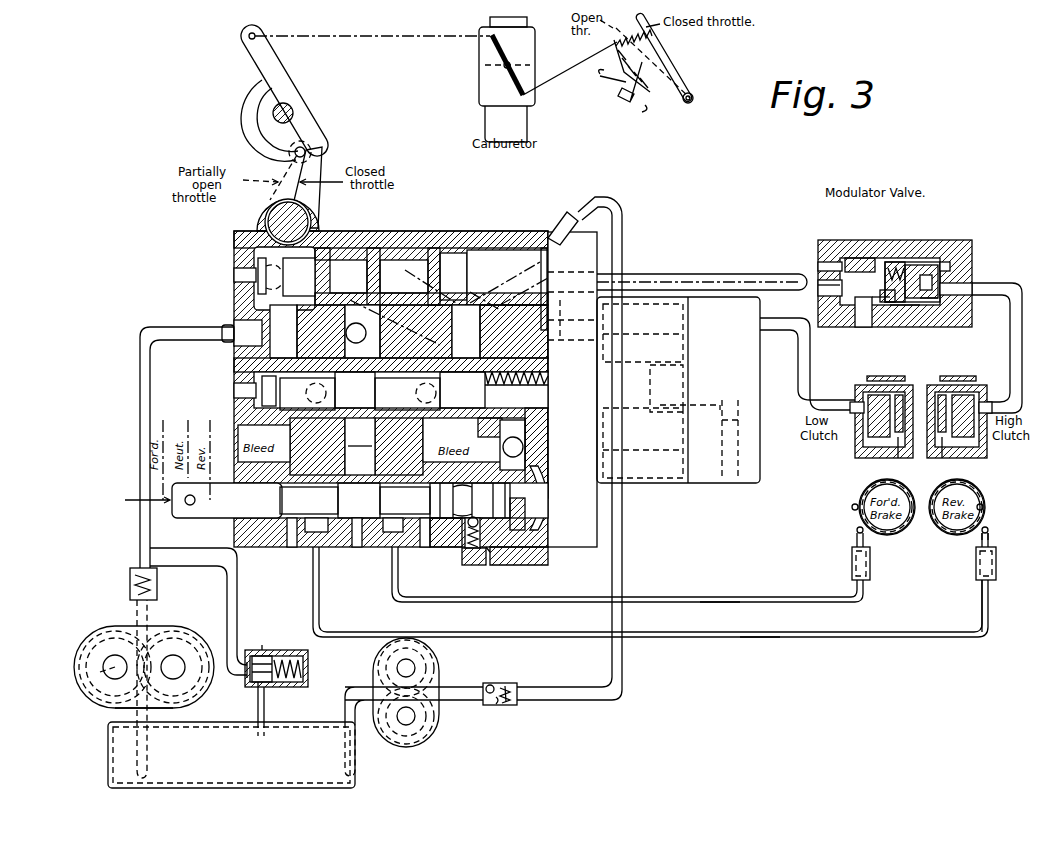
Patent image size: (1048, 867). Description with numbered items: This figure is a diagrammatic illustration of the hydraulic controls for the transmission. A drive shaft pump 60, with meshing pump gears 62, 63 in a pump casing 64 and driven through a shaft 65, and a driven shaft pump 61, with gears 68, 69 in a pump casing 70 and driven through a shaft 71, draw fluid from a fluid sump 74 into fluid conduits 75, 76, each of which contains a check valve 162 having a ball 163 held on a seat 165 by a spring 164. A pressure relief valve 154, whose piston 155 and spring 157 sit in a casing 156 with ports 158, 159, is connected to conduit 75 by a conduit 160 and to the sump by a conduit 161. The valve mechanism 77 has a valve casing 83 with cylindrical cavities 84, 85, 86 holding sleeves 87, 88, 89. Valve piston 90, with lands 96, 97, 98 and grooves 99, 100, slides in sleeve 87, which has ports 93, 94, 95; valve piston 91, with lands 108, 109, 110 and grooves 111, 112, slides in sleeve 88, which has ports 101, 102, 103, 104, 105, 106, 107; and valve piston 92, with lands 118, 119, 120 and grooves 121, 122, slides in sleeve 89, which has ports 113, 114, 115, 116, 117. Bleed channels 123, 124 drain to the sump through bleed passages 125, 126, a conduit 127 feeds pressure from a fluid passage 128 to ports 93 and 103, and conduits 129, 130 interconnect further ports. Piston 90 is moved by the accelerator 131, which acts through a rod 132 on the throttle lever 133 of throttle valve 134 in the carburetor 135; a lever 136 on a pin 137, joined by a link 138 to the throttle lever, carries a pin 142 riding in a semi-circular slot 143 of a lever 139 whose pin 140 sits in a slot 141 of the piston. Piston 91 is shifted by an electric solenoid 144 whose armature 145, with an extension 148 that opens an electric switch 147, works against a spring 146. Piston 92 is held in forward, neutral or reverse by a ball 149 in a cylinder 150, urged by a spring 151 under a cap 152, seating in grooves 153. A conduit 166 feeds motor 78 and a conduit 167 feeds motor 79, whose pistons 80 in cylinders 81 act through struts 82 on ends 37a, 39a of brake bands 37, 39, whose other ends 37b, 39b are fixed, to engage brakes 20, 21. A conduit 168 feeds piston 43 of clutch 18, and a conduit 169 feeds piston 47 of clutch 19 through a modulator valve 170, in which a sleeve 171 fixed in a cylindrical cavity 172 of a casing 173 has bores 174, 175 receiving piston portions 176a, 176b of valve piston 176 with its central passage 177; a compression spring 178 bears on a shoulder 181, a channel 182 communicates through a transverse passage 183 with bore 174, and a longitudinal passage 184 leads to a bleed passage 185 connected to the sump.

The lever 136 is at (272, 50).
The pin 137 is at (291, 107).
The link 138 is at (387, 40).
The lever 139 is at (322, 168).
The pin 142 is at (305, 146).
The semi-circular slot 143 is at (256, 125).
The accelerator 131 is at (665, 52).
The rod 132 is at (574, 70).
The throttle lever 133 is at (491, 37).
The throttle valve 134 is at (485, 65).
The carburetor 135 is at (472, 88).
The valve mechanism 77 is at (433, 219).
The land 96 is at (303, 262).
The land 97 is at (378, 231).
The port 93 is at (370, 250).
The port 94 is at (430, 252).
The port 95 is at (440, 250).
The sleeve 87 is at (440, 266).
The valve casing 83 is at (548, 236).
The cylindrical cavity 84 is at (550, 262).
The pin 140 is at (256, 256).
The valve piston 90 is at (246, 278).
The slot 141 is at (258, 290).
The bleed channel 123 is at (258, 326).
The land 98 is at (468, 276).
The conduit 127 is at (302, 277).
The groove 99 is at (348, 276).
The groove 100 is at (404, 276).
The bleed channel 124 is at (468, 314).
The conduit 129 is at (404, 320).
The port 101 is at (283, 331).
The port 102 is at (321, 331).
The fluid passage 128 is at (356, 333).
The port 104 is at (373, 331).
The port 105 is at (416, 331).
The port 106 is at (466, 331).
The port 107 is at (538, 349).
The sleeve 88 is at (256, 366).
The valve piston 91 is at (246, 391).
The land 108 is at (262, 396).
The bleed passage 125 is at (238, 433).
The groove 111 is at (307, 394).
The land 109 is at (355, 390).
The groove 112 is at (407, 394).
The land 110 is at (462, 390).
The spring 146 is at (546, 378).
The port 103 is at (360, 446).
The conduit 130 is at (360, 454).
The cylindrical cavity 85 is at (548, 428).
The bleed passage 126 is at (522, 447).
The sleeve 89 is at (540, 480).
The grooves 153 is at (490, 503).
The cylindrical cavity 86 is at (538, 522).
The land 118 is at (355, 469).
The groove 121 is at (309, 500).
The land 119 is at (359, 500).
The groove 122 is at (405, 500).
The port 113 is at (292, 547).
The port 114 is at (318, 556).
The port 115 is at (358, 547).
The port 116 is at (401, 556).
The port 117 is at (426, 548).
The land 120 is at (440, 548).
The cylinder 150 is at (466, 562).
The cap 152 is at (474, 566).
The ball 149 is at (498, 563).
The spring 151 is at (500, 568).
The fluid conduit 75 is at (140, 340).
The valve piston 92 is at (136, 500).
The conduit 160 is at (199, 553).
The check valve 162 is at (122, 577).
The drive shaft pump 60 is at (112, 621).
The pump casing 64 is at (158, 632).
The pump gear 63 is at (192, 648).
The shaft 65 is at (76, 682).
The pump gear 62 is at (108, 706).
The port 158 is at (250, 650).
The piston 155 is at (268, 656).
The casing 156 is at (290, 650).
The spring 157 is at (302, 668).
The port 159 is at (266, 688).
The pressure relief valve 154 is at (253, 700).
The conduit 161 is at (266, 712).
The shaft 71 is at (396, 666).
The gear 68 is at (430, 656).
The seat 165 is at (490, 684).
The spring 164 is at (512, 685).
The pump casing 70 is at (436, 714).
The gear 69 is at (436, 727).
The driven shaft pump 61 is at (430, 750).
The ball 163 is at (496, 707).
The fluid sump 74 is at (358, 769).
The fluid conduit 76 is at (622, 668).
The conduit 166 is at (716, 597).
The conduit 167 is at (758, 637).
The conduit 169 is at (688, 274).
The sleeve 171 is at (818, 278).
The casing 173 is at (818, 264).
The bore 174 is at (822, 288).
The conduit 168 is at (798, 353).
The armature 145 is at (690, 378).
The extension 148 is at (706, 404).
The electric switch 147 is at (745, 425).
The electric solenoid 144 is at (702, 483).
The transverse passage 183 is at (870, 244).
The piston portion 176a is at (895, 262).
The piston portion 176b is at (935, 265).
The compression spring 178 is at (915, 265).
The modulator valve 170 is at (979, 243).
The cylindrical cavity 172 is at (952, 265).
The valve piston 176 is at (942, 282).
The central passage 177 is at (933, 283).
The bleed passage 185 is at (855, 320).
The longitudinal passage 184 is at (872, 312).
The channel 182 is at (895, 305).
The shoulder 181 is at (912, 305).
The bore 175 is at (928, 305).
The brake band 37 is at (866, 379).
The brake band 39 is at (977, 378).
The piston 43 is at (862, 399).
The piston 47 is at (982, 399).
The clutch 18 is at (892, 452).
The clutch 19 is at (934, 452).
The brake 20 is at (862, 487).
The brake 21 is at (989, 491).
The band end 37b is at (852, 507).
The band end 37a is at (857, 530).
The band end 39b is at (983, 507).
The band end 39a is at (988, 530).
The cylinder 81 is at (997, 552).
The strut 82 is at (975, 552).
The piston 80 is at (996, 571).
The fluid pressure operated motor 78 is at (875, 572).
The fluid pressure operated motor 79 is at (970, 590).